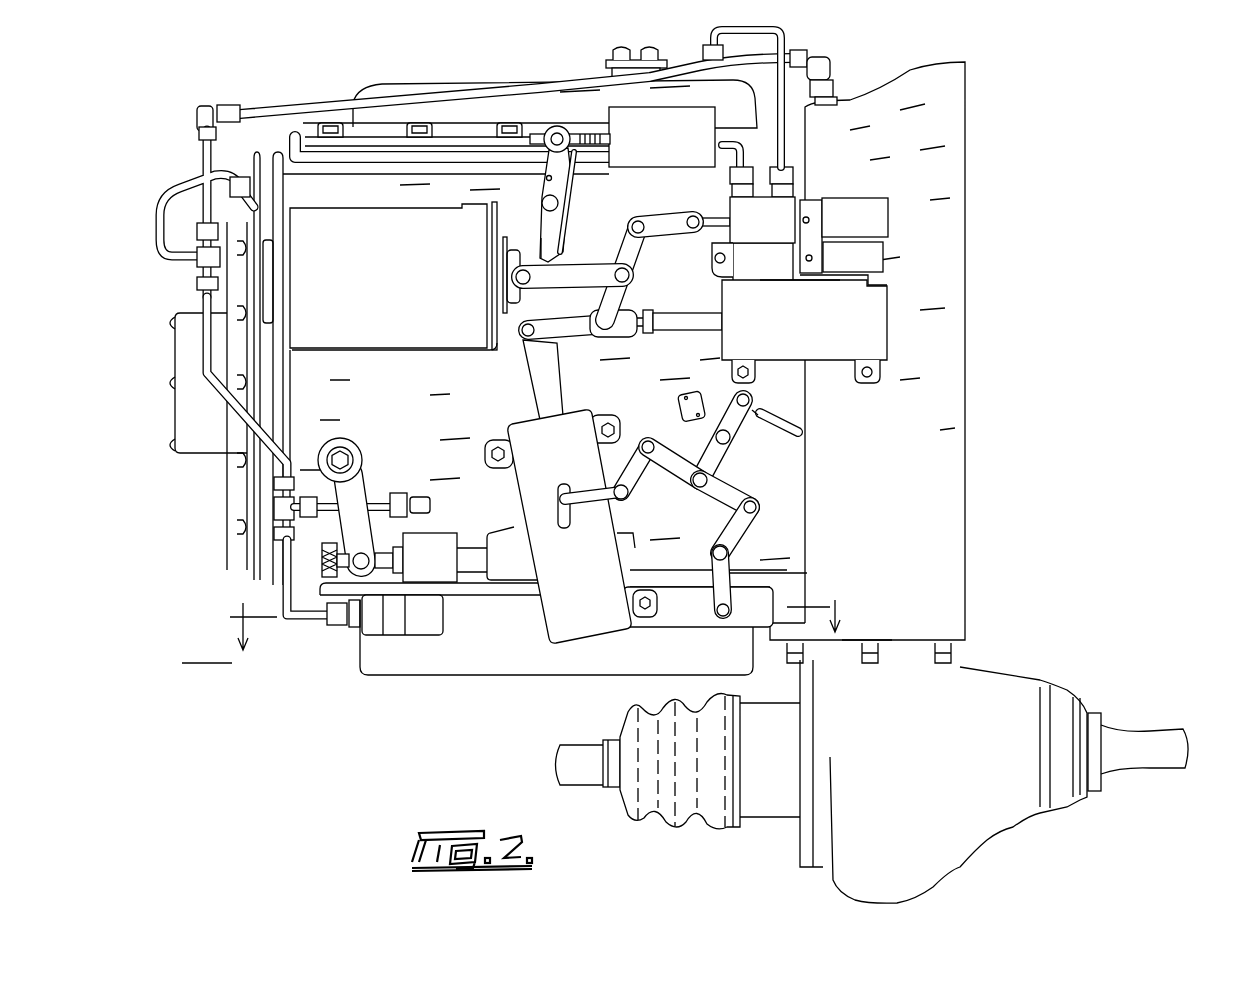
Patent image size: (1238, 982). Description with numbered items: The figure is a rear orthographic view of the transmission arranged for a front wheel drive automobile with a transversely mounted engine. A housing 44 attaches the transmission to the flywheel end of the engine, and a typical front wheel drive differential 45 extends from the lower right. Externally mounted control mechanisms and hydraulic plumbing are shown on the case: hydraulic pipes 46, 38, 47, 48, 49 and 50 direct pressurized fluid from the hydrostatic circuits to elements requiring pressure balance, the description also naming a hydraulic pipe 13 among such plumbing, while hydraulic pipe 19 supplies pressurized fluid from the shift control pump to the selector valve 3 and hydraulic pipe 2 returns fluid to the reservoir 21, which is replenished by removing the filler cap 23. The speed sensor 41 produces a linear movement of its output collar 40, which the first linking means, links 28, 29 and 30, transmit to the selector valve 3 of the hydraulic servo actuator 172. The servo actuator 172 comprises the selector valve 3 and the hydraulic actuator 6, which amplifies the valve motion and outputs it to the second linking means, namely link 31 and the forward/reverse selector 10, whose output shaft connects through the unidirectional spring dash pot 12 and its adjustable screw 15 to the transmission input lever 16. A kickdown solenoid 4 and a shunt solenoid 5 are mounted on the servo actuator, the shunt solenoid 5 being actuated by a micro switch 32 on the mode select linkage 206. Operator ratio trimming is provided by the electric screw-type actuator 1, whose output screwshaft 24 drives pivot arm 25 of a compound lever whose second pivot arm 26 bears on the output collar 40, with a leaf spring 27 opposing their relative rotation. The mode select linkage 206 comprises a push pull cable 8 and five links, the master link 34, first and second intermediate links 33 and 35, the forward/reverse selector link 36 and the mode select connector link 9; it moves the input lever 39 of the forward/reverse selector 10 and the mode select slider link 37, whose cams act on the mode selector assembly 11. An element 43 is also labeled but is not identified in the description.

The electric screw-type actuator 1 is at (682, 107).
The hydraulic pipe 2 is at (788, 47).
The selector valve 3 is at (795, 194).
The kickdown solenoid 4 is at (888, 220).
The shunt solenoid 5 is at (883, 257).
The hydraulic actuator 6 is at (888, 348).
The push pull cable 8 is at (797, 423).
The mode select connector link 9 is at (740, 540).
The forward/reverse selector 10 is at (590, 643).
The mode selector assembly 11 is at (448, 677).
The unidirectional spring dash pot 12 is at (447, 590).
The hydraulic pipe 13 is at (537, 631).
The adjustable screw 15 is at (320, 562).
The transmission input lever 16 is at (337, 433).
The hydraulic pipe 19 is at (287, 135).
The reservoir 21 is at (433, 82).
The filler cap 23 is at (613, 52).
The output screwshaft 24 is at (550, 126).
The pivot arm 25 is at (546, 178).
The pivot arm 26 is at (542, 240).
The leaf spring 27 is at (577, 190).
The link 28 is at (593, 267).
The link 29 is at (663, 214).
The link 30 is at (643, 253).
The link 31 is at (577, 337).
The micro switch 32 is at (684, 404).
The first intermediate link 33 is at (680, 457).
The master link 34 is at (735, 428).
The second intermediate link 35 is at (718, 502).
The forward/reverse selector link 36 is at (645, 473).
The mode select slider link 37 is at (693, 617).
The hydraulic pipe 38 is at (380, 500).
The input lever 39 is at (527, 388).
The output collar 40 is at (513, 340).
The speed sensor 41 is at (378, 352).
The wall 43 is at (810, 497).
The housing 44 is at (906, 362).
The front wheel drive differential 45 is at (1017, 672).
The hydraulic pipe 46 is at (305, 622).
The hydraulic pipe 47 is at (203, 363).
The hydraulic pipe 48 is at (187, 187).
The hydraulic pipe 49 is at (305, 104).
The hydraulic pipe 50 is at (197, 307).
The hydraulic servo actuator 172 is at (847, 307).
The mode select linkage 206 is at (740, 490).